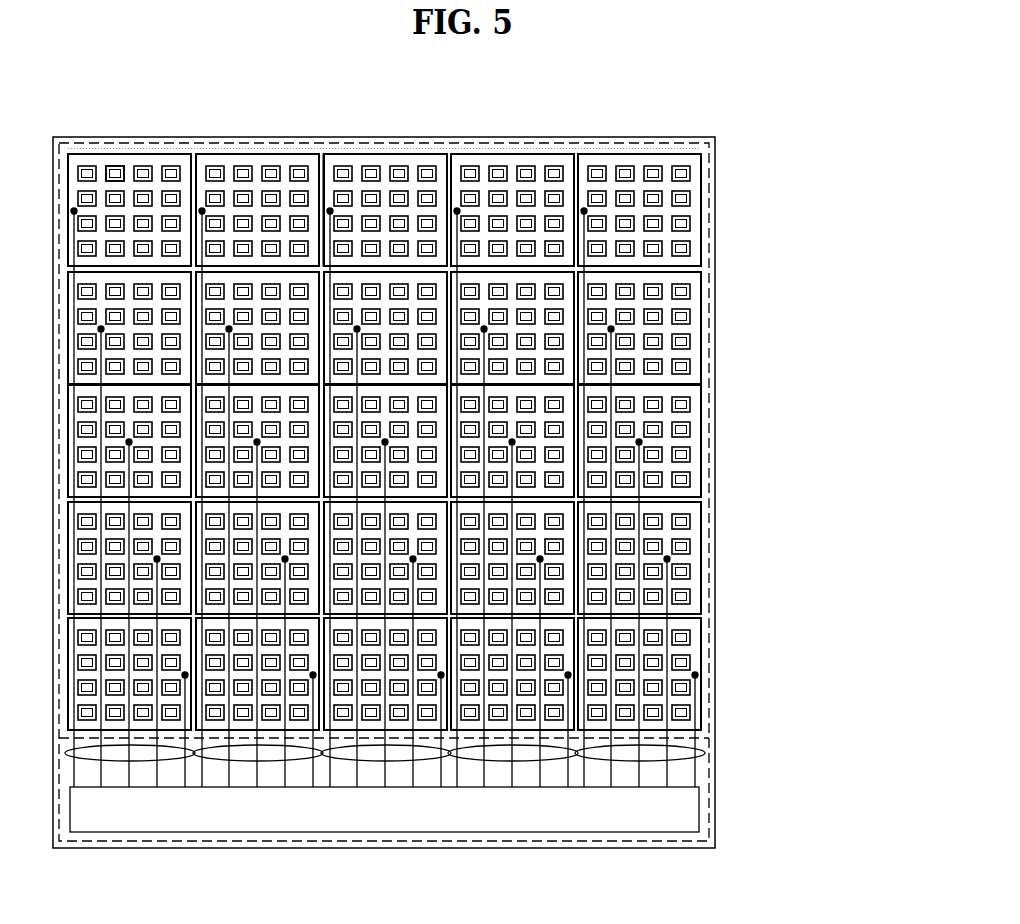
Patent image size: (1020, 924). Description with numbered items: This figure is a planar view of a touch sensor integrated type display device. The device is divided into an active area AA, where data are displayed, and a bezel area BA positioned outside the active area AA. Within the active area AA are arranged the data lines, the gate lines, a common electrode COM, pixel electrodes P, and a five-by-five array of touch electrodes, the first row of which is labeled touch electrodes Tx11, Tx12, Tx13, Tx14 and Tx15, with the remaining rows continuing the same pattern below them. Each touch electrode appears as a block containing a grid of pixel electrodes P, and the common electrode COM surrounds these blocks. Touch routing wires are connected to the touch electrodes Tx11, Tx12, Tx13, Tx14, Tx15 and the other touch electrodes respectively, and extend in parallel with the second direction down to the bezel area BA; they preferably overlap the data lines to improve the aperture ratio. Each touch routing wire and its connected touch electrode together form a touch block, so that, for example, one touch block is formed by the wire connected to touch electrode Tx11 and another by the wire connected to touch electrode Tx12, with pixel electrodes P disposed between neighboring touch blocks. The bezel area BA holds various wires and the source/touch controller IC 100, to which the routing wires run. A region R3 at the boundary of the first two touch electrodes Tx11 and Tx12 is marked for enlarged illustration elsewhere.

The common electrode COM is at (86, 148).
The pixel electrode P is at (117, 165).
The region R3 is at (324, 168).
The touch electrode Tx11 is at (162, 158).
The touch electrode Tx12 is at (253, 158).
The touch electrode Tx13 is at (381, 160).
The touch electrode Tx14 is at (507, 158).
The touch electrode Tx15 is at (635, 158).
The active area AA is at (710, 698).
The bezel area BA is at (710, 773).
The source/touch controller IC 100 is at (384, 809).